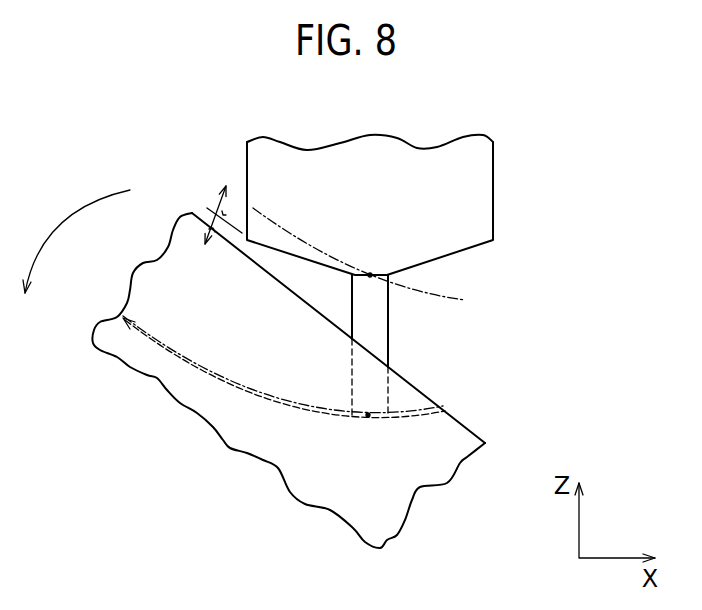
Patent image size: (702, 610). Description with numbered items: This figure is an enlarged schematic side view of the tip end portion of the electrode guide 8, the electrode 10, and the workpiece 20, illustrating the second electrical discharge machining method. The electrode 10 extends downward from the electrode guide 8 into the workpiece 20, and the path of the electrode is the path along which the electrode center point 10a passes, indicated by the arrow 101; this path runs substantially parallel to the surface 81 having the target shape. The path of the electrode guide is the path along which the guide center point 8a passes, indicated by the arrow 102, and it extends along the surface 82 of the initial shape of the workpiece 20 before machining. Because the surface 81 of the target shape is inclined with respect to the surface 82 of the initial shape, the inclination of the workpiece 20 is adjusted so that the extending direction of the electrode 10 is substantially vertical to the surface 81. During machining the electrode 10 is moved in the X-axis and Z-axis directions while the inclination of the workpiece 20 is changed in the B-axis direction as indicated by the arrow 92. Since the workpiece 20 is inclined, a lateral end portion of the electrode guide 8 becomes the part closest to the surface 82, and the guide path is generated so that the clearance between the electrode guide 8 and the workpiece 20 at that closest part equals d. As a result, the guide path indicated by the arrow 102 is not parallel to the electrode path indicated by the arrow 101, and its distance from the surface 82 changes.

The electrode guide 8 is at (482, 188).
The guide center point 8a is at (370, 275).
The electrode 10 is at (386, 338).
The electrode center point 10a is at (368, 415).
The workpiece 20 is at (173, 382).
The surface having the target shape 81 is at (290, 407).
The surface in the initial shape 82 is at (425, 397).
The arrow indicating B-axis direction 92 is at (73, 215).
The arrow indicating path of the electrode 101 is at (233, 382).
The arrow indicating path of the electrode guide 102 is at (463, 298).
The clearance d is at (207, 208).